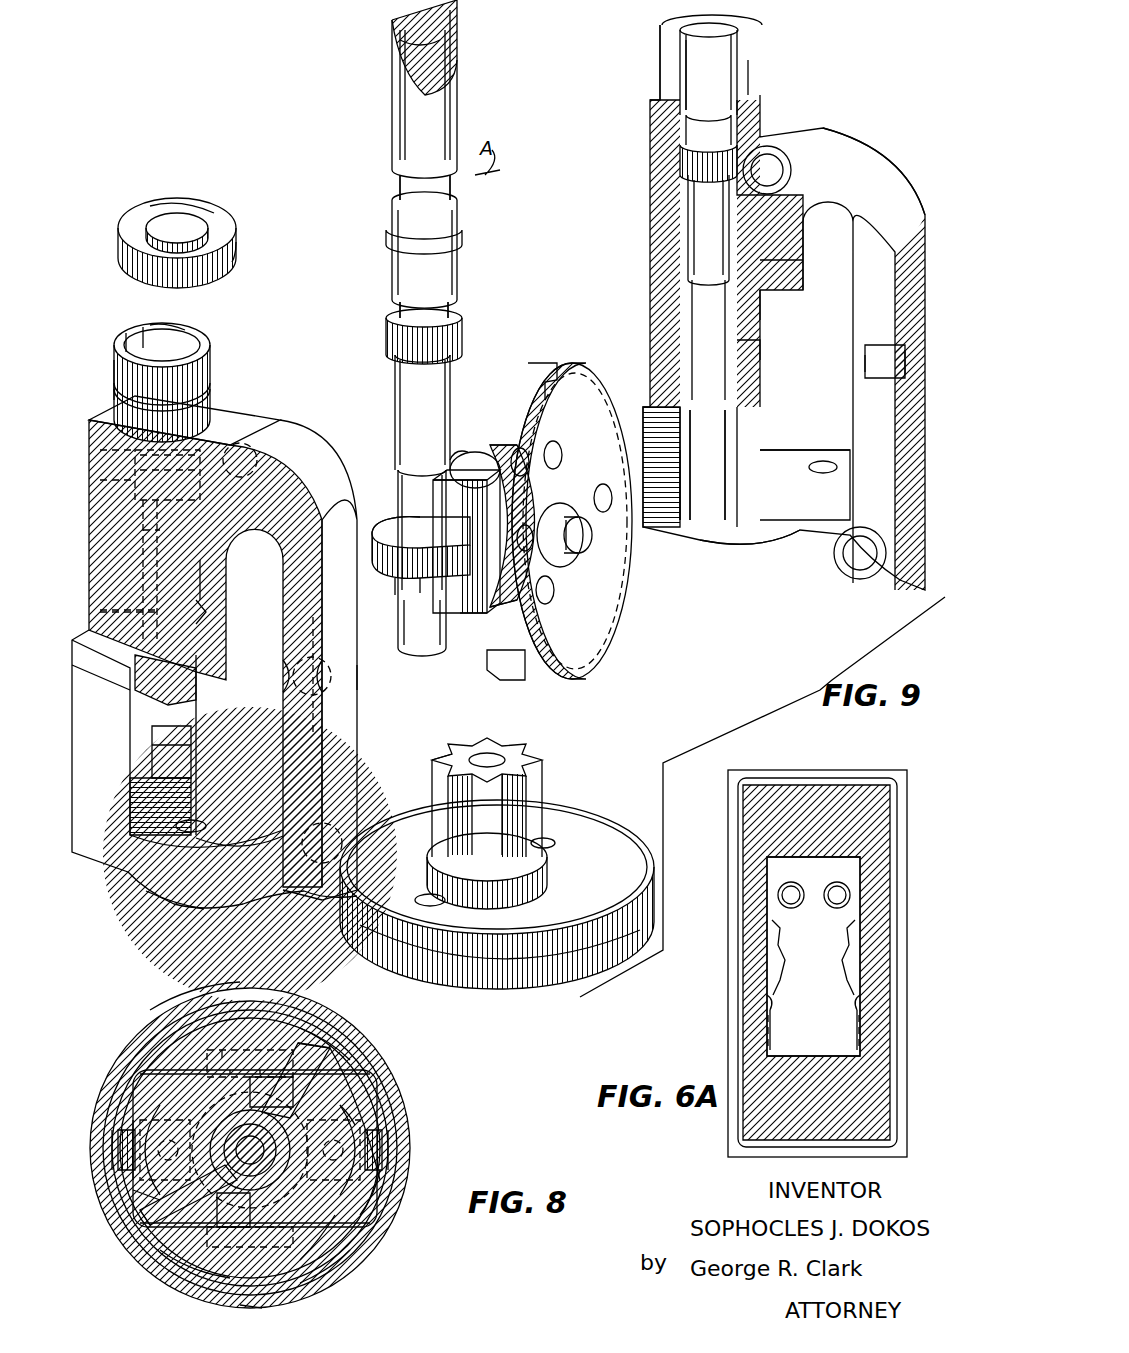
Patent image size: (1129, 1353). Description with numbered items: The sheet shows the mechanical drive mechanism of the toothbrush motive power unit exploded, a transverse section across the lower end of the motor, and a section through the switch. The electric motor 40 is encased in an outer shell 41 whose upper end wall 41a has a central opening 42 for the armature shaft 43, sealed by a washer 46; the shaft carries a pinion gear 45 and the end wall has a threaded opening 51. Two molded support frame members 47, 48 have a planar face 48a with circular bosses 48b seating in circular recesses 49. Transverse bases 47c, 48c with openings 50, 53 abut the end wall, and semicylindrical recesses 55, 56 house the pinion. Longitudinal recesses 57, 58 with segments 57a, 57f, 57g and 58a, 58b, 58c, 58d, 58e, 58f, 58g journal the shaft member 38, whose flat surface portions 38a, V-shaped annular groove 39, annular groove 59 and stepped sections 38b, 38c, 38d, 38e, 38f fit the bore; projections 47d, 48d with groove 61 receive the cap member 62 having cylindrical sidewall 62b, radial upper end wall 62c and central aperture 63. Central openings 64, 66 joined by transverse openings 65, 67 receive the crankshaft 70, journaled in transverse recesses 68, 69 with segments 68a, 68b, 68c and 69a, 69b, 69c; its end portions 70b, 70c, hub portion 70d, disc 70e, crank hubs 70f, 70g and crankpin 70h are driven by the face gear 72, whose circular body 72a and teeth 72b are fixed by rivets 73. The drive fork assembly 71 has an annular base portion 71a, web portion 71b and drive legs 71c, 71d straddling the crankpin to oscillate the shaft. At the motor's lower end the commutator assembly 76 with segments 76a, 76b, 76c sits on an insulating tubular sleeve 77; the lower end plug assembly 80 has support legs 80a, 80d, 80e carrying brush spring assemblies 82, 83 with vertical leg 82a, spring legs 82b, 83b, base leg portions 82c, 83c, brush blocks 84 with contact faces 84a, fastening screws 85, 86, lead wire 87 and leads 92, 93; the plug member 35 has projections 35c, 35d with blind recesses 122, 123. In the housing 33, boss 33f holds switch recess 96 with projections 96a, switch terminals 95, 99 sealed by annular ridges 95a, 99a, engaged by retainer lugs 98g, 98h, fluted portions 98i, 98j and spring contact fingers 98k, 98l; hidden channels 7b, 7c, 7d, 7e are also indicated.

In FIG. 8, the housing 33 is at (190, 1000).
In FIG. 6A, the housing 33 is at (790, 768).
In FIG. 6A, the boss 33f is at (830, 840).
In FIG. 8, the plug member 35 is at (150, 1050).
In FIG. 8, the projection 35c is at (330, 1278).
In FIG. 8, the projection 35d is at (190, 1012).
In FIG. 9, the shaft member 38 is at (390, 104).
In FIG. 9, the flat surface portions 38a is at (392, 40).
In FIG. 9, the shaft section 38b is at (398, 310).
In FIG. 9, the shaft segment 38c is at (386, 336).
In FIG. 9, the shaft section 38d is at (396, 370).
In FIG. 9, the shaft section 38e is at (396, 460).
In FIG. 9, the shaft portion 38f is at (412, 656).
In FIG. 9, the V-shaped annular groove 39 is at (398, 185).
In FIG. 9, the electric motor 40 is at (615, 828).
In FIG. 9, the outer shell 41 is at (445, 975).
In FIG. 9, the upper end wall 41a is at (410, 820).
In FIG. 9, the central opening 42 is at (500, 875).
In FIG. 9, the armature shaft 43 is at (487, 755).
In FIG. 9, the pinion gear 45 is at (445, 758).
In FIG. 9, the washer 46 is at (470, 868).
In FIG. 9, the support frame member 47 is at (80, 862).
In FIG. 9, the transverse base 47c is at (168, 898).
In FIG. 9, the semicylindrical projection 47d is at (120, 360).
In FIG. 9, the support frame member 48 is at (925, 595).
In FIG. 9, the planar face 48a is at (840, 170).
In FIG. 9, the circular bosses 48b is at (770, 160).
In FIG. 9, the transverse base 48c is at (830, 450).
In FIG. 9, the semicylindrical projection 48d is at (658, 70).
In FIG. 9, the circular recesses 49 is at (248, 455).
In FIG. 9, the opening 50 is at (196, 818).
In FIG. 9, the threaded opening 51 is at (420, 896).
In FIG. 9, the opening 53 is at (818, 462).
In FIG. 9, the semicylindrical recess 55 is at (250, 838).
In FIG. 9, the semicylindrical recess 56 is at (800, 532).
In FIG. 9, the longitudinal recess 57 is at (160, 338).
In FIG. 9, the semicylindrical segment 57a is at (180, 348).
In FIG. 9, the semicylindrical segment 57f is at (180, 740).
In FIG. 9, the semicylindrical segment 57g is at (140, 850).
In FIG. 9, the longitudinal recess 58 is at (738, 38).
In FIG. 9, the semicylindrical segment 58a is at (686, 88).
In FIG. 9, the semicylindrical segment 58b is at (686, 136).
In FIG. 9, the semicylindrical segment 58c is at (680, 165).
In FIG. 9, the semicylindrical segment 58d is at (690, 228).
In FIG. 9, the semicylindrical segment 58e is at (692, 295).
In FIG. 9, the semicylindrical segment 58f is at (690, 470).
In FIG. 9, the semicylindrical segment 58g is at (700, 510).
In FIG. 9, the annular groove 59 is at (386, 238).
In FIG. 9, the groove 61 is at (212, 386).
In FIG. 9, the cap member 62 is at (227, 208).
In FIG. 9, the cylindrical sidewall 62b is at (236, 250).
In FIG. 9, the radial upper end wall 62c is at (202, 204).
In FIG. 9, the central aperture 63 is at (172, 212).
In FIG. 9, the central opening 64 is at (215, 568).
In FIG. 9, the transverse opening 65 is at (192, 690).
In FIG. 9, the central opening 66 is at (790, 258).
In FIG. 9, the transverse opening 67 is at (768, 350).
In FIG. 9, the transverse recess 68 is at (345, 690).
In FIG. 9, the recess segment 68a is at (340, 668).
In FIG. 9, the recess segment 68b is at (292, 676).
In FIG. 9, the recess segment 68c is at (204, 612).
In FIG. 9, the transverse recess 69 is at (910, 375).
In FIG. 9, the recess segment 69a is at (910, 355).
In FIG. 9, the recess segment 69b is at (866, 368).
In FIG. 9, the recess segment 69c is at (768, 310).
In FIG. 9, the crankshaft 70 is at (590, 548).
In FIG. 9, the end portion 70b is at (586, 560).
In FIG. 9, the end portion 70c is at (452, 458).
In FIG. 9, the hub portion 70d is at (575, 555).
In FIG. 9, the disc 70e is at (558, 445).
In FIG. 9, the crank hub 70f is at (500, 608).
In FIG. 9, the crank hub 70g is at (496, 444).
In FIG. 9, the crankpin 70h is at (462, 614).
In FIG. 9, the drive fork assembly 71 is at (395, 518).
In FIG. 9, the annular base portion 71a is at (380, 520).
In FIG. 9, the web portion 71b is at (418, 602).
In FIG. 9, the drive leg 71c is at (450, 478).
In FIG. 9, the drive leg 71d is at (520, 448).
In FIG. 9, the face gear 72 is at (568, 655).
In FIG. 9, the circular body 72a is at (550, 664).
In FIG. 9, the teeth 72b is at (490, 676).
In FIG. 9, the rivets 73 is at (603, 484).
In FIG. 8, the commutator assembly 76 is at (335, 1050).
In FIG. 8, the commutator segment 76a is at (138, 1218).
In FIG. 8, the commutator segment 76b is at (310, 1040).
In FIG. 8, the commutator segment 76c is at (378, 1190).
In FIG. 8, the insulating tubular sleeve 77 is at (235, 1148).
In FIG. 8, the lower end plug assembly 80 is at (125, 1245).
In FIG. 8, the support leg 80a is at (372, 1222).
In FIG. 8, the support leg 80d is at (340, 1032).
In FIG. 8, the support leg 80e is at (170, 1262).
In FIG. 8, the brush spring assembly 82 is at (175, 1080).
In FIG. 8, the vertical leg 82a is at (130, 1158).
In FIG. 8, the brush-supporting spring leg 82b is at (245, 1068).
In FIG. 8, the base leg portion 82c is at (130, 1192).
In FIG. 8, the brush spring assembly 83 is at (362, 1140).
In FIG. 8, the brush-supporting spring leg 83b is at (318, 1280).
In FIG. 8, the base leg portion 83c is at (358, 1120).
In FIG. 8, the brush block 84 is at (272, 1085).
In FIG. 8, the contact face 84a is at (250, 1100).
In FIG. 8, the fastening screw 85 is at (118, 1130).
In FIG. 8, the fastening screw 86 is at (365, 1155).
In FIG. 8, the lead wire 87 is at (112, 1148).
In FIG. 8, the lead 92 is at (382, 1135).
In FIG. 8, the lead 93 is at (388, 1165).
In FIG. 6A, the switch terminal 95 is at (780, 896).
In FIG. 6A, the annular ridge 95a is at (785, 888).
In FIG. 6A, the switch recess 96 is at (826, 858).
In FIG. 6A, the projections 96a is at (765, 1012).
In FIG. 6A, the retainer lug 98g is at (860, 990).
In FIG. 6A, the retainer lug 98h is at (768, 992).
In FIG. 6A, the fluted portion 98i is at (860, 1035).
In FIG. 6A, the fluted portion 98j is at (766, 1035).
In FIG. 6A, the spring contact finger 98k is at (850, 940).
In FIG. 6A, the spring contact finger 98l is at (775, 940).
In FIG. 6A, the switch terminal 99 is at (852, 896).
In FIG. 6A, the annular ridge 99a is at (843, 888).
In FIG. 8, the blind recess 122 is at (250, 1308).
In FIG. 8, the blind recess 123 is at (225, 1048).
In FIG. 9, the channel 7b is at (135, 448).
In FIG. 9, the channel 7c is at (135, 470).
In FIG. 9, the channel 7d is at (140, 528).
In FIG. 9, the channel 7e is at (100, 614).